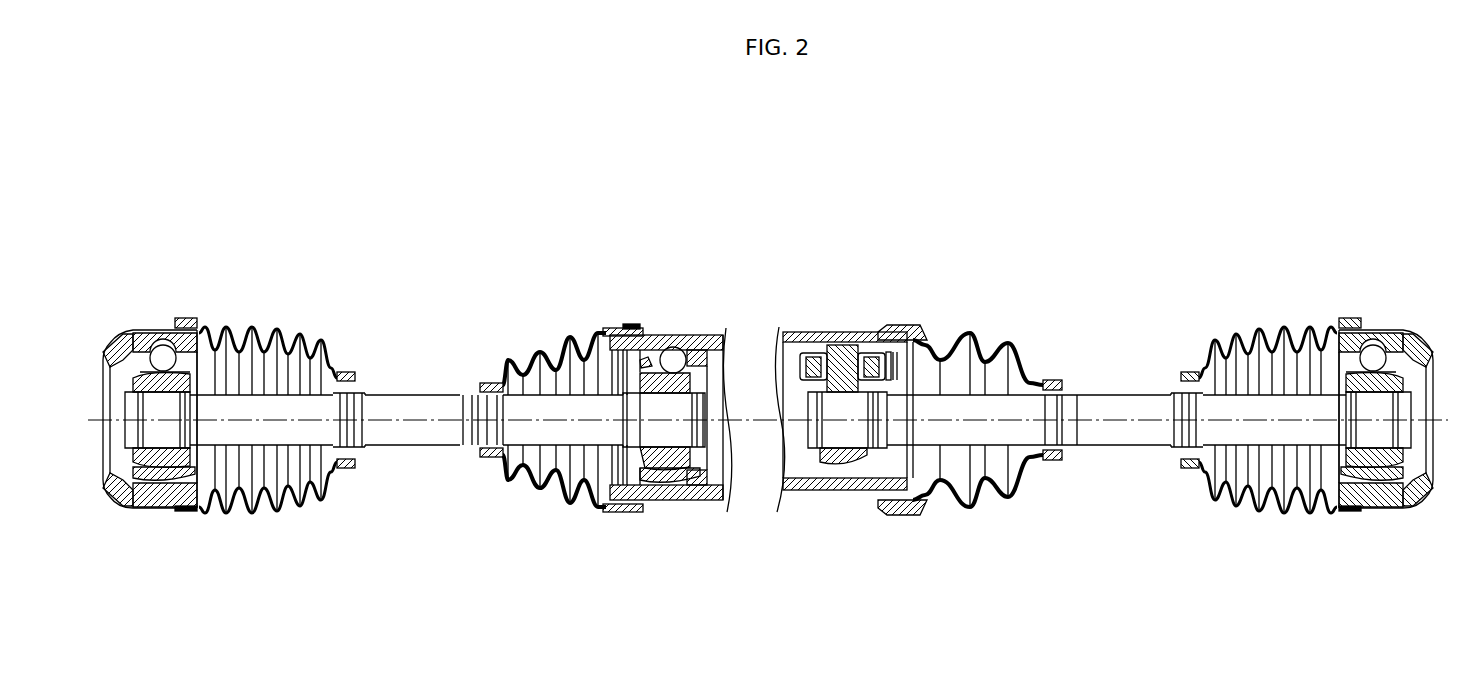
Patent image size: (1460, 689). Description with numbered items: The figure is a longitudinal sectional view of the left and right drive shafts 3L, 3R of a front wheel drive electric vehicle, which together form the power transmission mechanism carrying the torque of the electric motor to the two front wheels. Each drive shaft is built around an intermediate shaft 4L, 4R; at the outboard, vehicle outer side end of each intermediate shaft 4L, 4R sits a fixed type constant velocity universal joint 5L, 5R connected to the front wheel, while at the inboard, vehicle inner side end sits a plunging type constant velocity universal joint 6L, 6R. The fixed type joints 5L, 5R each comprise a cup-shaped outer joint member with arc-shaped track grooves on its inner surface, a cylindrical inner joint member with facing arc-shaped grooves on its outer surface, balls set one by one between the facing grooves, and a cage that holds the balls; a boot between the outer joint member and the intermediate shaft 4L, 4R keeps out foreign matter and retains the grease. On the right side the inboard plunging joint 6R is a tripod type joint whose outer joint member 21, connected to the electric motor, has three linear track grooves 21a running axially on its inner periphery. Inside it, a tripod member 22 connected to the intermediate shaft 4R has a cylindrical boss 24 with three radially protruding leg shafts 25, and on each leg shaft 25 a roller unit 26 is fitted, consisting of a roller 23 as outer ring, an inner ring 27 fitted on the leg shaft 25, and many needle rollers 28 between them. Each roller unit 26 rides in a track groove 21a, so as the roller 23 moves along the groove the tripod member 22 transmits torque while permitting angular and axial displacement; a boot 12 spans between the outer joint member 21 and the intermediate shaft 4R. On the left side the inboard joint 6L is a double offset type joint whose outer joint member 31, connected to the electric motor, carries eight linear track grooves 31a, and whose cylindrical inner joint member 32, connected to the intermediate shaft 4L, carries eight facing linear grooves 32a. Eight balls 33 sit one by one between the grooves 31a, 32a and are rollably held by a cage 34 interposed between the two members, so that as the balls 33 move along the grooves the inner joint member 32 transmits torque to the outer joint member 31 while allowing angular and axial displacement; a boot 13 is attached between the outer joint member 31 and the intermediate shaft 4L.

The left drive shaft 3L is at (422, 318).
The right drive shaft 3R is at (1118, 318).
The intermediate shaft 4L is at (415, 445).
The intermediate shaft 4R is at (1125, 445).
The fixed type constant velocity universal joint 5L is at (140, 332).
The fixed type constant velocity universal joint 5R is at (1396, 332).
The plunging type constant velocity universal joint 6L is at (655, 330).
The plunging type constant velocity universal joint 6R is at (845, 330).
The boot 12 is at (988, 497).
The boot 13 is at (553, 493).
The outer joint member 21 is at (807, 336).
The track groove 21a is at (785, 355).
The tripod member 22 is at (820, 460).
The roller 23 is at (885, 365).
The boss 24 is at (850, 458).
The leg shaft 25 is at (837, 350).
The roller unit 26 is at (897, 353).
The inner ring 27 is at (868, 355).
The needle roller 28 is at (889, 352).
The outer joint member 31 is at (708, 338).
The track groove 31a is at (725, 345).
The inner joint member 32 is at (657, 470).
The track groove 32a is at (643, 360).
The ball 33 is at (673, 358).
The cage 34 is at (695, 485).